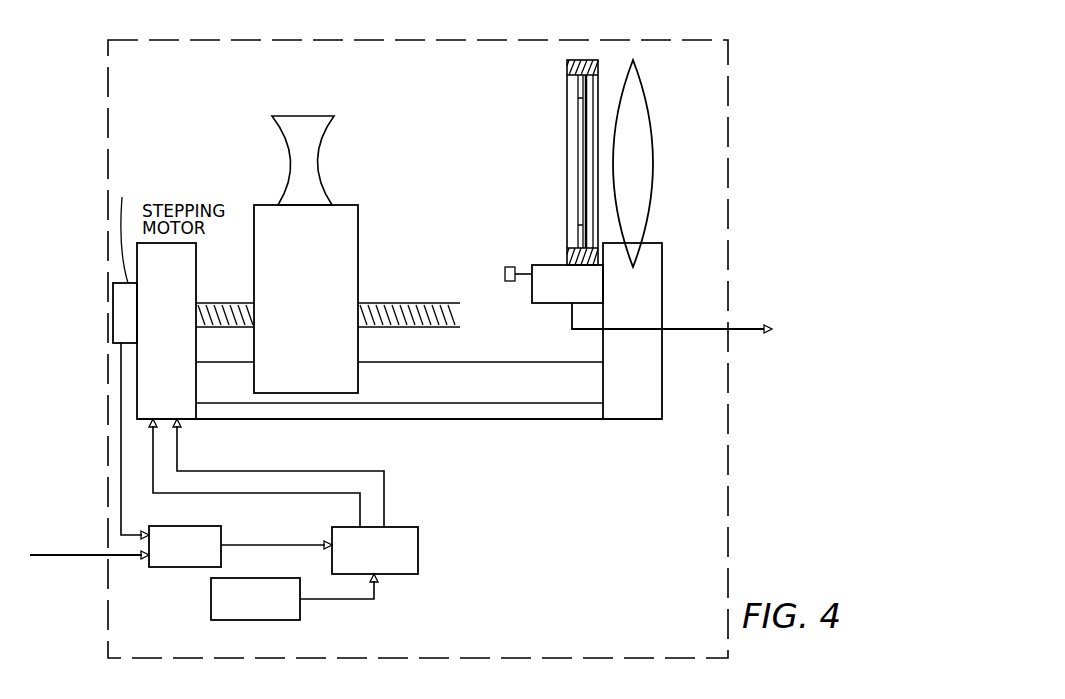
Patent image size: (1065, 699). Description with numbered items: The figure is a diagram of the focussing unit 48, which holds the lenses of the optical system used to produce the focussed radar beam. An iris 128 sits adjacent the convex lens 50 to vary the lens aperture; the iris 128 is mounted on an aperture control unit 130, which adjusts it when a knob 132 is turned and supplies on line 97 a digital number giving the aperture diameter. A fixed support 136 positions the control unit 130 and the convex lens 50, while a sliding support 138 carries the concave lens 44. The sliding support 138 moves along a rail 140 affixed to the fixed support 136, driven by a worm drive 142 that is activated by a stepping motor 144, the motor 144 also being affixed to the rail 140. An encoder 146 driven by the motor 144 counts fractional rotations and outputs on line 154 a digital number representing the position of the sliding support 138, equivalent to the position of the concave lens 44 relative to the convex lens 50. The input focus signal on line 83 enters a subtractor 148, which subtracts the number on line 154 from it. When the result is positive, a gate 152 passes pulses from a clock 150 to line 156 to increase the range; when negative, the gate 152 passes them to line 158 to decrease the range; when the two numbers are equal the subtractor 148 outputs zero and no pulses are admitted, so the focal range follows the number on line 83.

The concave lens 44 is at (312, 116).
The focussing unit 48 is at (390, 39).
The convex lens 50 is at (650, 135).
The input focus signal line 83 is at (93, 557).
The lens aperture output line 97 is at (742, 330).
The iris 128 is at (567, 102).
The aperture control unit 130 is at (538, 265).
The knob 132 is at (510, 267).
The fixed support 136 is at (662, 298).
The sliding support 138 is at (358, 258).
The rail 140 is at (522, 362).
The worm drive 142 is at (406, 302).
The stepping motor 144 is at (196, 298).
The encoder 146 is at (112, 296).
The subtractor 148 is at (182, 567).
The clock 150 is at (295, 620).
The gate 152 is at (418, 566).
The encoder output line 154 is at (121, 520).
The increase range line 156 is at (384, 482).
The decrease range line 158 is at (360, 510).